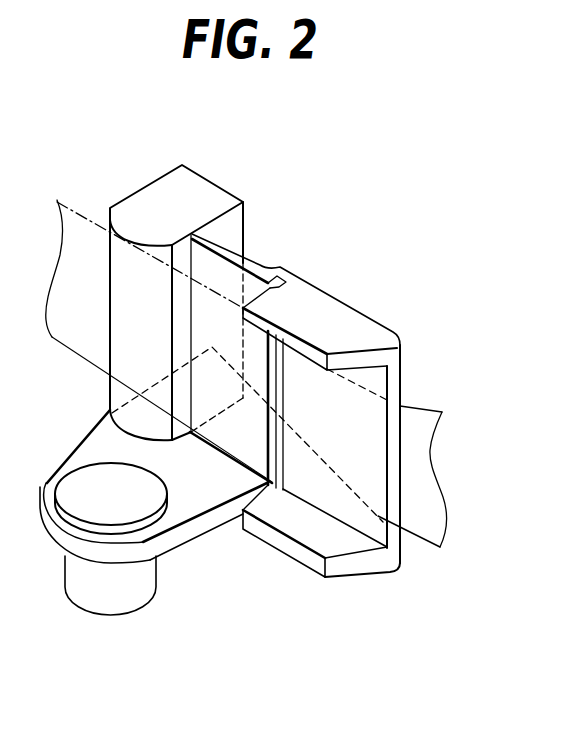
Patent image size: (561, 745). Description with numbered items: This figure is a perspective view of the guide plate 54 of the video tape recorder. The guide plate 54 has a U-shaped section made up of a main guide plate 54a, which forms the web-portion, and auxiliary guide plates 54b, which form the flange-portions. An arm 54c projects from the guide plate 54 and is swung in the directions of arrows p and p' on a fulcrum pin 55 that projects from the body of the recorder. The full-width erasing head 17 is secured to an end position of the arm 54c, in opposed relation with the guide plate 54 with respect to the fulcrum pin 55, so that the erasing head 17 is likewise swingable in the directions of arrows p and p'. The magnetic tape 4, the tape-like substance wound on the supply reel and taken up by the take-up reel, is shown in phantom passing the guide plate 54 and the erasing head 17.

The magnetic tape 4 is at (64, 351).
The full-width erasing head 17 is at (186, 188).
The guide plate 54 is at (266, 402).
The main guide plate 54a is at (374, 430).
The auxiliary guide plates 54b is at (357, 326).
The arm 54c is at (210, 488).
The fulcrum pin 55 is at (133, 590).